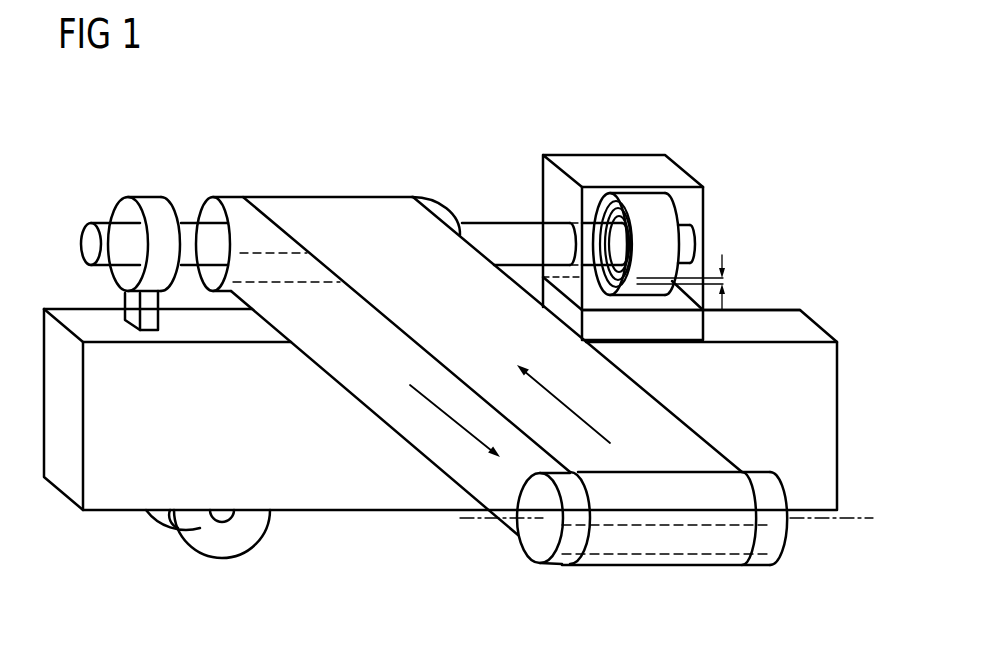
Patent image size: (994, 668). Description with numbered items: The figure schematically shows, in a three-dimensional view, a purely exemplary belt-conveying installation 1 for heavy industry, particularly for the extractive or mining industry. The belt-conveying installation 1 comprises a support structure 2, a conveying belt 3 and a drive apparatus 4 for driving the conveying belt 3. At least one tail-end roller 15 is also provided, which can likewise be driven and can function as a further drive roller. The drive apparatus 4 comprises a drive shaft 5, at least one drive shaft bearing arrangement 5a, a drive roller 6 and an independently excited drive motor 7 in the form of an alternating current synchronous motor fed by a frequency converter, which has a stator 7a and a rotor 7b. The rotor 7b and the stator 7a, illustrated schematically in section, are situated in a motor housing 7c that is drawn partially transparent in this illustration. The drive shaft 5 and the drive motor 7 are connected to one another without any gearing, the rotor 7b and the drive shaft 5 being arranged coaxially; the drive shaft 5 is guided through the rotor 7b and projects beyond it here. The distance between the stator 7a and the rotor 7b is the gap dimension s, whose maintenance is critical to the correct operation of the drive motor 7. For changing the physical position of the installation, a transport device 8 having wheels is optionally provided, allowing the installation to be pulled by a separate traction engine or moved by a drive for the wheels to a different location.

The belt-conveying installation 1 is at (808, 144).
The support structure 2 is at (392, 512).
The conveying belt 3 is at (695, 557).
The drive apparatus 4 is at (510, 190).
The drive shaft 5 is at (478, 222).
The drive shaft bearing arrangement 5a is at (143, 197).
The drive roller 6 is at (427, 197).
The drive motor 7 is at (696, 207).
The stator 7a is at (640, 193).
The rotor 7b is at (605, 194).
The motor housing 7c is at (569, 165).
The transport device 8 is at (220, 558).
The tail-end roller 15 is at (547, 545).
The gap dimension s is at (723, 283).